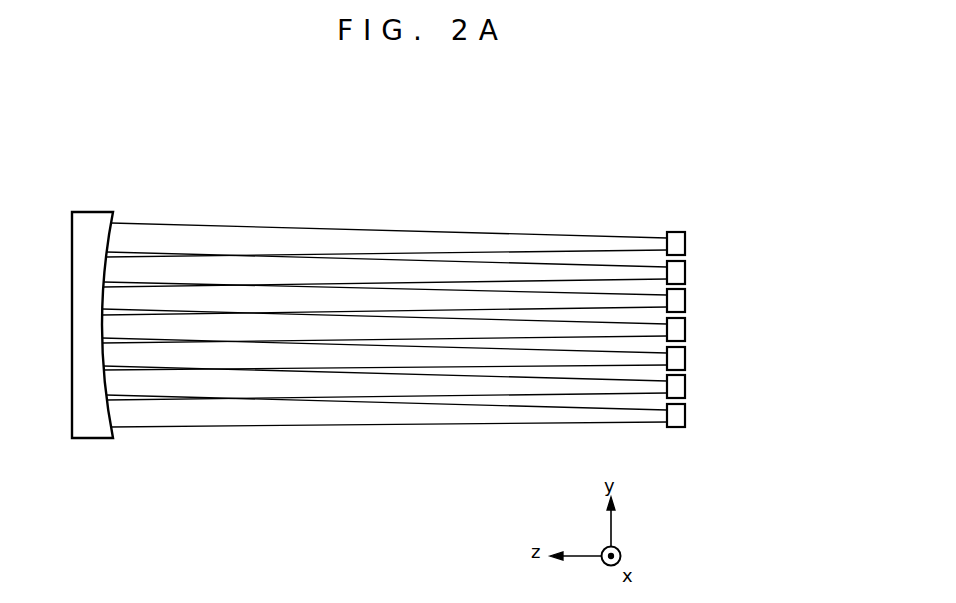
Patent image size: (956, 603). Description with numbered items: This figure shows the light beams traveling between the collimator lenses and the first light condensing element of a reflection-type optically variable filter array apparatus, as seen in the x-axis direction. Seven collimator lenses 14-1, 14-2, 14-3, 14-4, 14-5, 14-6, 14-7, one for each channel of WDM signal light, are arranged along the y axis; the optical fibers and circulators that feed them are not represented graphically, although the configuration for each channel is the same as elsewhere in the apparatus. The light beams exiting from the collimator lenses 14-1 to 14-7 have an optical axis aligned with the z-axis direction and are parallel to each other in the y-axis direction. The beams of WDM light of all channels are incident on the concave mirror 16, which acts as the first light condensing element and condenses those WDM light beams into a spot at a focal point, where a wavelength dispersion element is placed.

The concave mirror 16 is at (92, 212).
The collimator lens 14-1 is at (685, 415).
The collimator lens 14-2 is at (685, 385).
The collimator lens 14-3 is at (685, 358).
The collimator lens 14-4 is at (685, 330).
The collimator lens 14-5 is at (685, 300).
The collimator lens 14-6 is at (685, 272).
The collimator lens 14-7 is at (685, 247).